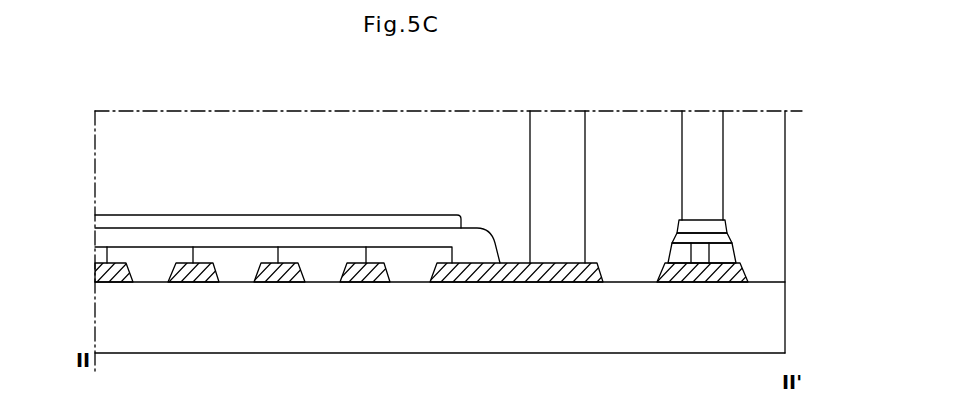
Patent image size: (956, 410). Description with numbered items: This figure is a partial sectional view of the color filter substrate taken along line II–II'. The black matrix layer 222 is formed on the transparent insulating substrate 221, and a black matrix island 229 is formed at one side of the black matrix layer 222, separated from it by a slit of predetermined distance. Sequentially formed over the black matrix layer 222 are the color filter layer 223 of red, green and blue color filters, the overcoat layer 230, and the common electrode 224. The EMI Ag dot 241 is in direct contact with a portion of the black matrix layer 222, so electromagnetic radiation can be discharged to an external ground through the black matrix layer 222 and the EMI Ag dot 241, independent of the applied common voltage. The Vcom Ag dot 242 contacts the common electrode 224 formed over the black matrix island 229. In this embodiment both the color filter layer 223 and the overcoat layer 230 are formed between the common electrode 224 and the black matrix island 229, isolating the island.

The transparent insulating substrate 221 is at (775, 314).
The black matrix layer 222 is at (110, 263).
The color filter layer 223 is at (235, 282).
The common electrode 224 is at (95, 219).
The black matrix island 229 is at (700, 282).
The overcoat layer 230 is at (95, 238).
The EMI Ag dot 241 is at (553, 116).
The Vcom Ag dot 242 is at (723, 168).